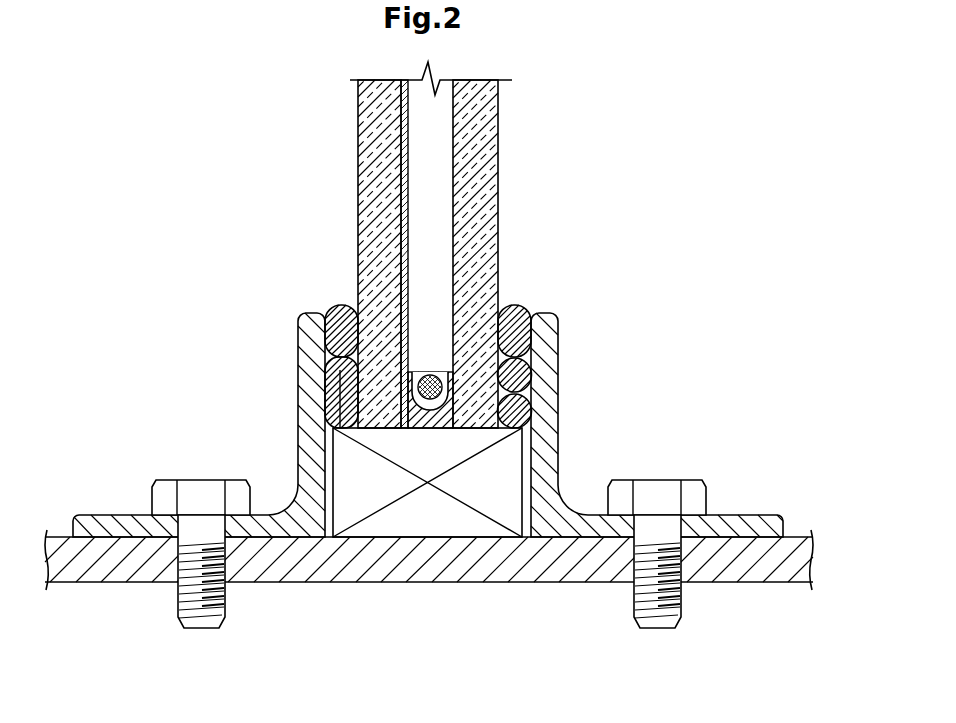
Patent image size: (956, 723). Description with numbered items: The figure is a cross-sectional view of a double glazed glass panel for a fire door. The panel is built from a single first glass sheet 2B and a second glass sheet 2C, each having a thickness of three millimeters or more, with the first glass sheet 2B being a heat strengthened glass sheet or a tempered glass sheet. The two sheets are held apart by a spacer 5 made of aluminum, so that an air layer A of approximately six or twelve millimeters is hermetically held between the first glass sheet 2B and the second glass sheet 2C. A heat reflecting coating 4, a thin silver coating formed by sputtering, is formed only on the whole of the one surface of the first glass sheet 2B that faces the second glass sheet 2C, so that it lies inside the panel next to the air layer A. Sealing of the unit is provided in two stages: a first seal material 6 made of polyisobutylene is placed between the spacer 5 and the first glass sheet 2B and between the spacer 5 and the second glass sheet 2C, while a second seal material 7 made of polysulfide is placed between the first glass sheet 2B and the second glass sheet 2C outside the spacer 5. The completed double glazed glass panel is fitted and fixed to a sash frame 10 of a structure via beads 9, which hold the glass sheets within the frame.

The first glass sheet 2B is at (362, 148).
The second glass sheet 2C is at (491, 117).
The heat reflecting coating 4 is at (407, 153).
The air layer A is at (432, 202).
The spacer 5 is at (424, 372).
The first seal material 6 is at (350, 383).
The second seal material 7 is at (436, 430).
The beads 9 is at (332, 308).
The sash frame 10 is at (300, 430).